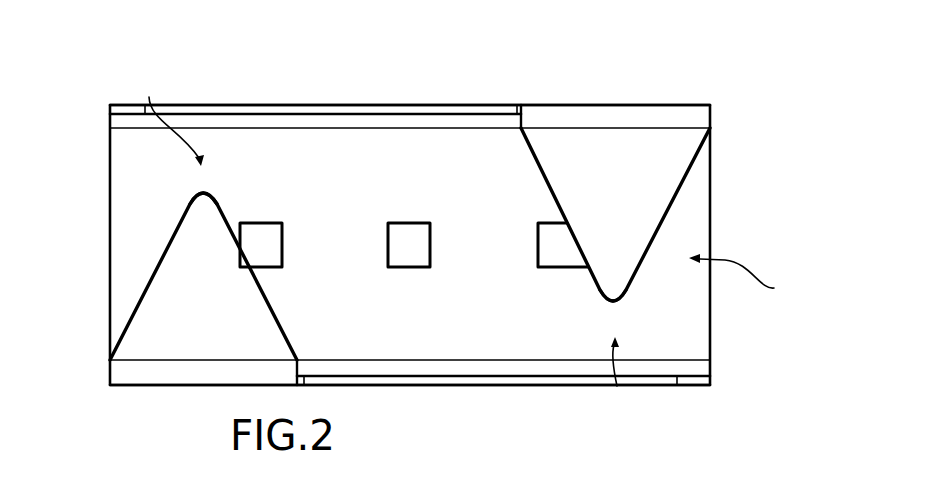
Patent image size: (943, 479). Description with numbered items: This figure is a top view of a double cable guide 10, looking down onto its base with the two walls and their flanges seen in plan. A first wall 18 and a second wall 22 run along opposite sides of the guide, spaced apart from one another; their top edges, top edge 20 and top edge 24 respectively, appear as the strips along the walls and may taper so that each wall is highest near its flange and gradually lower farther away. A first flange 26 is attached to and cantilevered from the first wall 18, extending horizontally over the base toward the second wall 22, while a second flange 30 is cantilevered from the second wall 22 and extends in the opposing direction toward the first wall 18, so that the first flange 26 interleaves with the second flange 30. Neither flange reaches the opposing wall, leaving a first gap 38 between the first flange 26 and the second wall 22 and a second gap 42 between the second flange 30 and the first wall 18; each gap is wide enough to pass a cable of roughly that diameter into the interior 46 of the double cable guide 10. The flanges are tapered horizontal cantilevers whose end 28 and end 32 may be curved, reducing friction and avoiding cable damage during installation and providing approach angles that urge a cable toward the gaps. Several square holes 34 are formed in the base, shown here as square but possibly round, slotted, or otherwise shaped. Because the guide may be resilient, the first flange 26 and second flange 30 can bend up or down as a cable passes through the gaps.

The double cable guide 10 is at (434, 74).
The first wall 18 is at (317, 105).
The top edge 20 is at (397, 113).
The second wall 22 is at (566, 386).
The top edge 24 is at (444, 378).
The first flange 26 is at (628, 190).
The end 28 is at (614, 282).
The second flange 30 is at (211, 314).
The end 32 is at (200, 220).
The hole 34 is at (410, 237).
The first gap 38 is at (617, 386).
The second gap 42 is at (170, 116).
The interior 46 is at (744, 278).